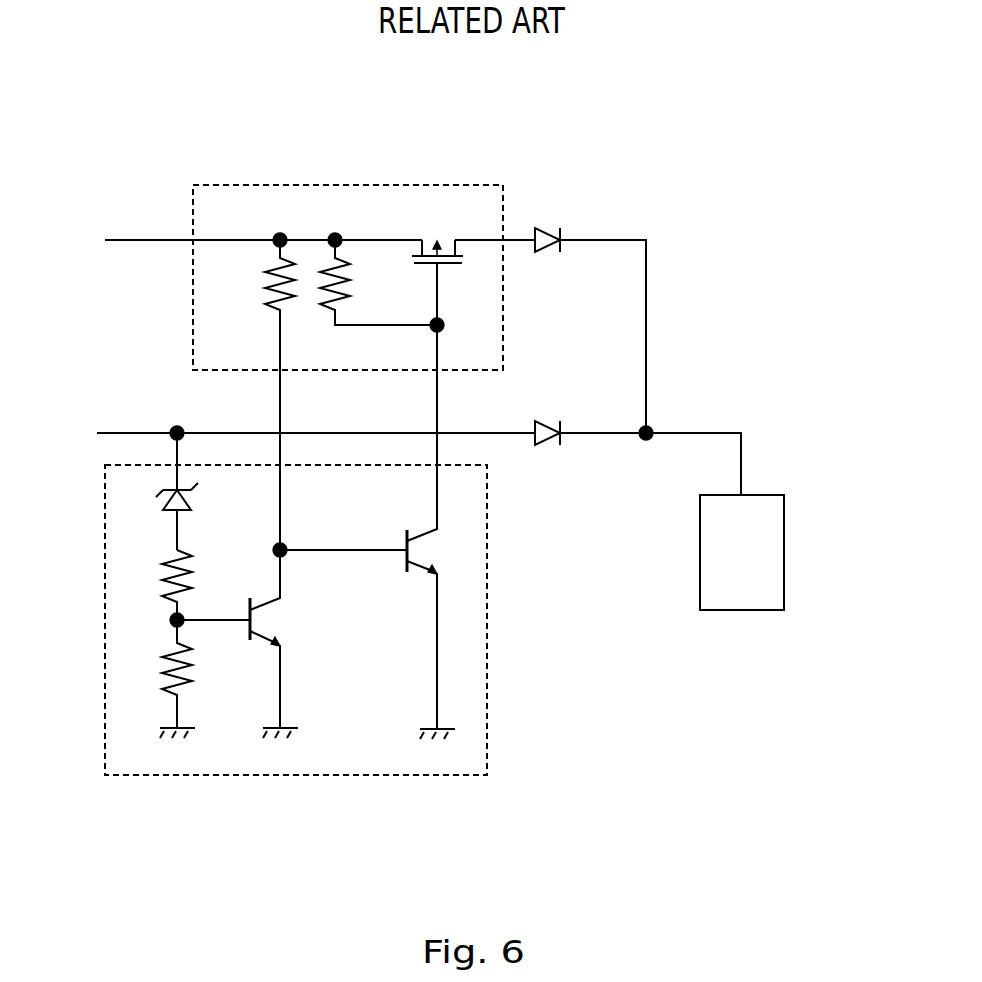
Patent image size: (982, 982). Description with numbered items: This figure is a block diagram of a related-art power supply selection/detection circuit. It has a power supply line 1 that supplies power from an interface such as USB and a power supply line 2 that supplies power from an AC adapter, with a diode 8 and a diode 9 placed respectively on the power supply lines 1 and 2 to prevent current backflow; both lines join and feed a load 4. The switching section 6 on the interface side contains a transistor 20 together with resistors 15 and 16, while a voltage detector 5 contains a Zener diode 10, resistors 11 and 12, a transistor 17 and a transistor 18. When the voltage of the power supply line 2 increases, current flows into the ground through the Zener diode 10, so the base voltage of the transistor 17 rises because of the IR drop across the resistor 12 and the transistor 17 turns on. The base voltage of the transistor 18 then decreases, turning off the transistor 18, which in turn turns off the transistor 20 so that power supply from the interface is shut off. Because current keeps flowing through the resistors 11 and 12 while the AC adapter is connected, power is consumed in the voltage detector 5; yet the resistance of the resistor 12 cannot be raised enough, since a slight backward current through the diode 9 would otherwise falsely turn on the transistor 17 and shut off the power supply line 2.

The power supply line 1 is at (106, 239).
The power supply line 2 is at (98, 432).
The load 4 is at (740, 612).
The voltage detector 5 is at (450, 776).
The switching circuit 6 is at (462, 372).
The diode 8 is at (548, 230).
The diode 9 is at (546, 422).
The Zener diode 10 is at (166, 505).
The resistor 11 is at (164, 592).
The resistor 12 is at (164, 683).
The resistor 15 is at (268, 312).
The resistor 16 is at (325, 312).
The transistor 17 is at (274, 618).
The transistor 18 is at (428, 544).
The transistor 20 is at (441, 231).